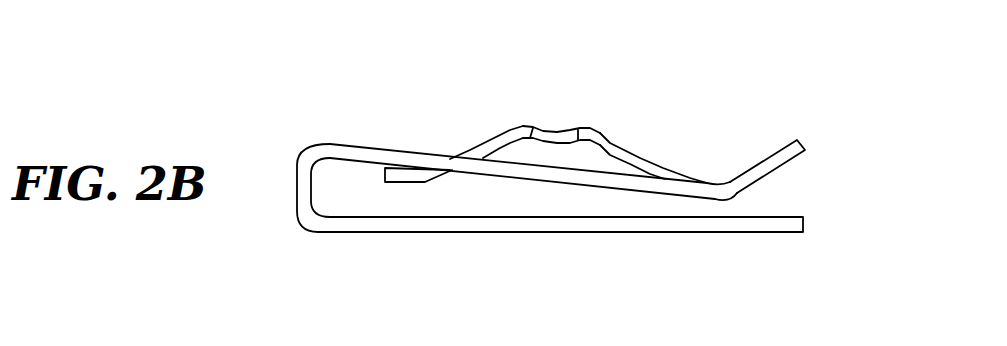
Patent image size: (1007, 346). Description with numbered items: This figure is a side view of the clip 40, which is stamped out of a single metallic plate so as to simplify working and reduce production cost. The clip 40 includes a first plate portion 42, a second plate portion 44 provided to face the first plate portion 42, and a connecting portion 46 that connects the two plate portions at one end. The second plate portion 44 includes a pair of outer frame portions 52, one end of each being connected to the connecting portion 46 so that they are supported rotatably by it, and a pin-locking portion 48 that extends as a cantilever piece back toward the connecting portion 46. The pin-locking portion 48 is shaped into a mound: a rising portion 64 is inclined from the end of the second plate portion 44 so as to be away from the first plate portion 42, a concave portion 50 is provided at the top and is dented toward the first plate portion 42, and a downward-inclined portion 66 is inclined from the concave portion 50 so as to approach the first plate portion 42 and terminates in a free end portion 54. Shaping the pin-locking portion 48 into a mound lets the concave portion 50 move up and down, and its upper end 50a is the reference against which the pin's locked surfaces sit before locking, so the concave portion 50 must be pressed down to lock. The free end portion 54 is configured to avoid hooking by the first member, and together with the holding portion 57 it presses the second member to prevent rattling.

The clip 40 is at (538, 273).
The first plate portion 42 is at (780, 227).
The second plate portion 44 is at (707, 188).
The connecting portion 46 is at (296, 188).
The pin-locking portion 48 is at (627, 147).
The concave portion 50 is at (552, 130).
The upper end 50a is at (527, 127).
The outer frame portion 52 is at (528, 172).
The free end portion 54 is at (402, 169).
The holding portion 57 is at (730, 201).
The rising portion 64 is at (652, 158).
The downward-inclined portion 66 is at (477, 147).